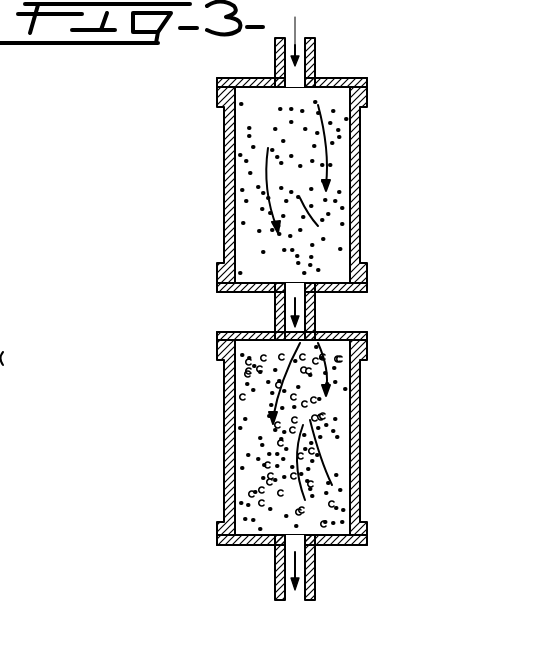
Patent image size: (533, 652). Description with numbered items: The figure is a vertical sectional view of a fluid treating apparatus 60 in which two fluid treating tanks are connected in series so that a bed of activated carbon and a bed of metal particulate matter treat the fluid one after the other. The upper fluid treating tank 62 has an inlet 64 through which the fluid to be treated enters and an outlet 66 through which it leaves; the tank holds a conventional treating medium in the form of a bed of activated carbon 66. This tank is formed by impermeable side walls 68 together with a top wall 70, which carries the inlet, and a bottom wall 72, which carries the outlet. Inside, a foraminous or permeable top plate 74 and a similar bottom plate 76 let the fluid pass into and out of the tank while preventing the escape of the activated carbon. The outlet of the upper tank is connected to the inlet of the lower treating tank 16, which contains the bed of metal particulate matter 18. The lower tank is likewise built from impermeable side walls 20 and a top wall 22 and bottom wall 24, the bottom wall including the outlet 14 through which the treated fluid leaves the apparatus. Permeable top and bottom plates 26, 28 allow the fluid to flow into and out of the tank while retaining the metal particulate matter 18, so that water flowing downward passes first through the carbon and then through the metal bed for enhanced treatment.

The outlet 14 is at (315, 581).
The treating tank 16 is at (351, 462).
The bed of metal particulate matter 18 is at (340, 497).
The impermeable side walls 20 is at (223, 445).
The top wall 22 is at (364, 332).
The bottom wall 24 is at (241, 543).
The top plate 26 is at (275, 322).
The bottom plate 28 is at (275, 565).
The apparatus 60 is at (166, 329).
The fluid treating tank 62 is at (223, 212).
The inlet 64 is at (313, 63).
The bed of activated carbon 66 is at (340, 167).
The impermeable side walls 68 is at (223, 151).
The top wall 70 is at (333, 78).
The bottom wall 72 is at (233, 292).
The top plate 74 is at (282, 78).
The bottom plate 76 is at (340, 275).